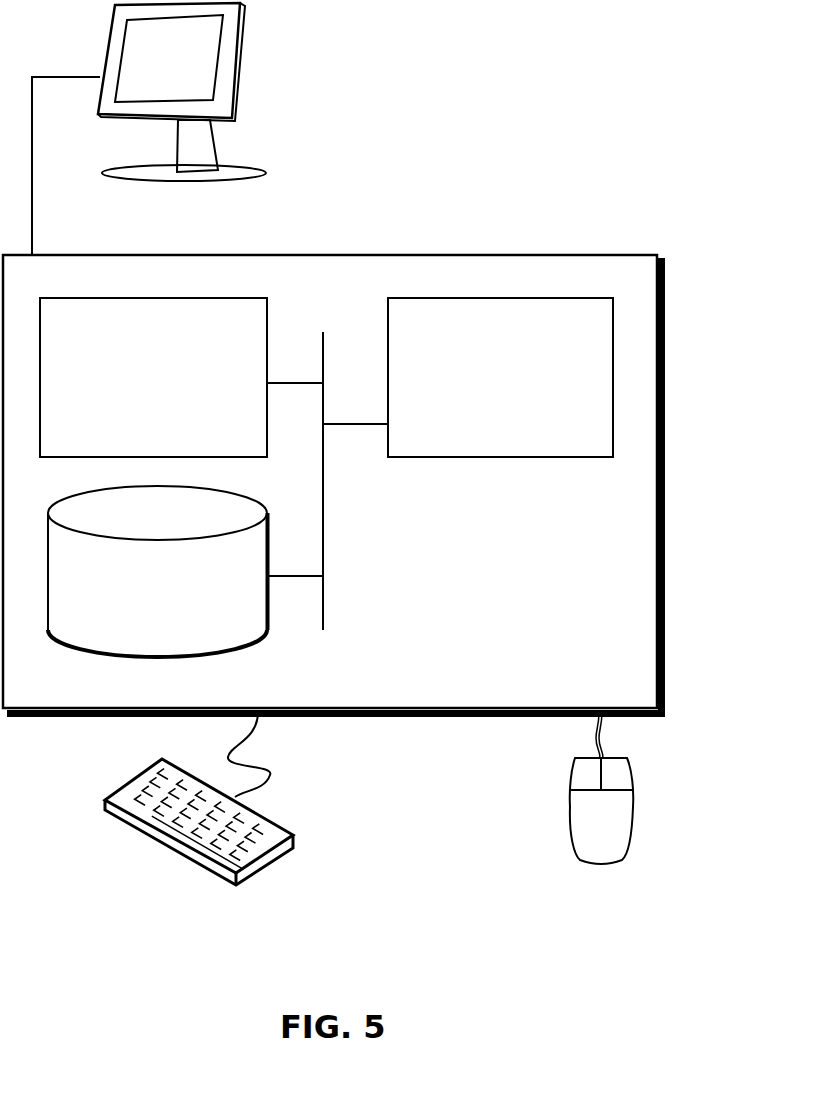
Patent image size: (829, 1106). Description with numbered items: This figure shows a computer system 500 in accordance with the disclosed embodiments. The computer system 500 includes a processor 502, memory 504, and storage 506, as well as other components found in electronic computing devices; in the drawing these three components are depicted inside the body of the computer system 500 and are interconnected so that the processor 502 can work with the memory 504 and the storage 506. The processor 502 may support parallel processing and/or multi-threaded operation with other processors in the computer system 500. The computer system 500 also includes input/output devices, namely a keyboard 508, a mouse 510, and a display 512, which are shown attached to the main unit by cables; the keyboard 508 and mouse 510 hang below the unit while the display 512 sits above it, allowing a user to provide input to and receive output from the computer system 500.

The computer system 500 is at (377, 235).
The processor 502 is at (483, 390).
The memory 504 is at (133, 389).
The storage 506 is at (139, 599).
The keyboard 508 is at (123, 822).
The mouse 510 is at (581, 832).
The display 512 is at (149, 129).